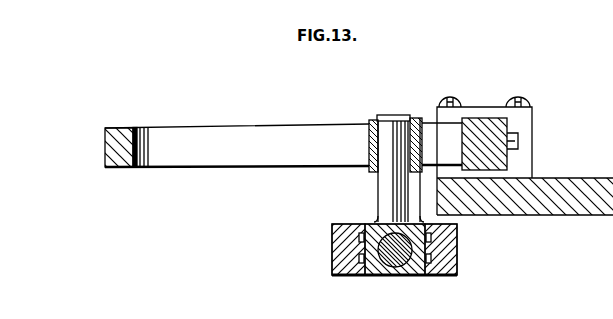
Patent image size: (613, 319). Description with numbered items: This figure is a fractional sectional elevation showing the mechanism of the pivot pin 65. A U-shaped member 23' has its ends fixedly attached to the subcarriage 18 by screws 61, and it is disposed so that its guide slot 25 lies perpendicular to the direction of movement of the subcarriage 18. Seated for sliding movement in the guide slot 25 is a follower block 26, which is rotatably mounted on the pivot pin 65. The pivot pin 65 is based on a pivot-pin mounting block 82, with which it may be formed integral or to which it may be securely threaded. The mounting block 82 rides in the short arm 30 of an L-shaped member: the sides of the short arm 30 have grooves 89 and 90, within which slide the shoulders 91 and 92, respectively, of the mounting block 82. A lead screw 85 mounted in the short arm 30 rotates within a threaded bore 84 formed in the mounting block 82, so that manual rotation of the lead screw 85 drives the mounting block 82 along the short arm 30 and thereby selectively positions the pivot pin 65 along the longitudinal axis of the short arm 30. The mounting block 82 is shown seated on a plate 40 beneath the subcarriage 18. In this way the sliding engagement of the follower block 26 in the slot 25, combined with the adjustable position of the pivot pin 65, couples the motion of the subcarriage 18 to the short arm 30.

The guide slot 25 is at (250, 158).
The U-shaped member 23' is at (109, 160).
The follower block 26 is at (370, 121).
The pivot pin 65 is at (393, 115).
The pivot-pin mounting block 82 is at (370, 222).
The subcarriage 18 is at (510, 158).
The screws 61 is at (517, 141).
The plate 40 is at (593, 178).
The short arm 30 is at (402, 263).
The lead screw 85 is at (402, 262).
The threaded bore 84 is at (388, 256).
The shoulder 91 is at (358, 243).
The groove 89 is at (360, 258).
The groove 90 is at (428, 242).
The shoulder 92 is at (428, 257).